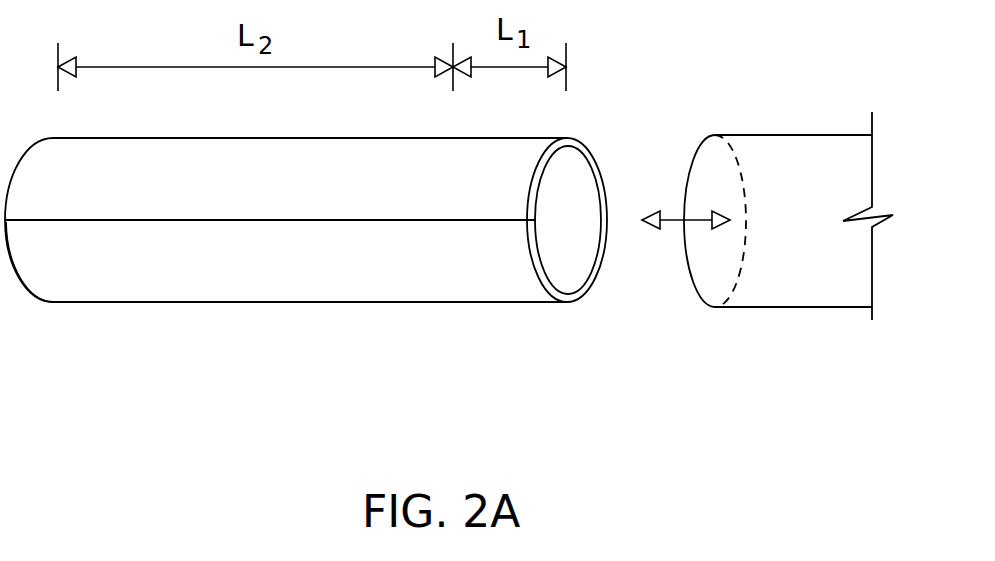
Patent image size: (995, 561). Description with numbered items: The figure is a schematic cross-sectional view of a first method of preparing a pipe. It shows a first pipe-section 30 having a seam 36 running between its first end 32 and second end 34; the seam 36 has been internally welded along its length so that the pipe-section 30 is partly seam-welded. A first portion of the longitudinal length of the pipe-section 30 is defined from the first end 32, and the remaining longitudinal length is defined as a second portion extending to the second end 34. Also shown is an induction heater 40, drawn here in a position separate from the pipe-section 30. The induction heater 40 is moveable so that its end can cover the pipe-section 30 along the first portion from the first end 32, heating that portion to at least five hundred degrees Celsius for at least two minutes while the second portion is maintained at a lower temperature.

The first pipe-section 30 is at (268, 360).
The first end 32 is at (560, 298).
The second end 34 is at (28, 292).
The seam 36 is at (395, 220).
The induction heater 40 is at (782, 150).